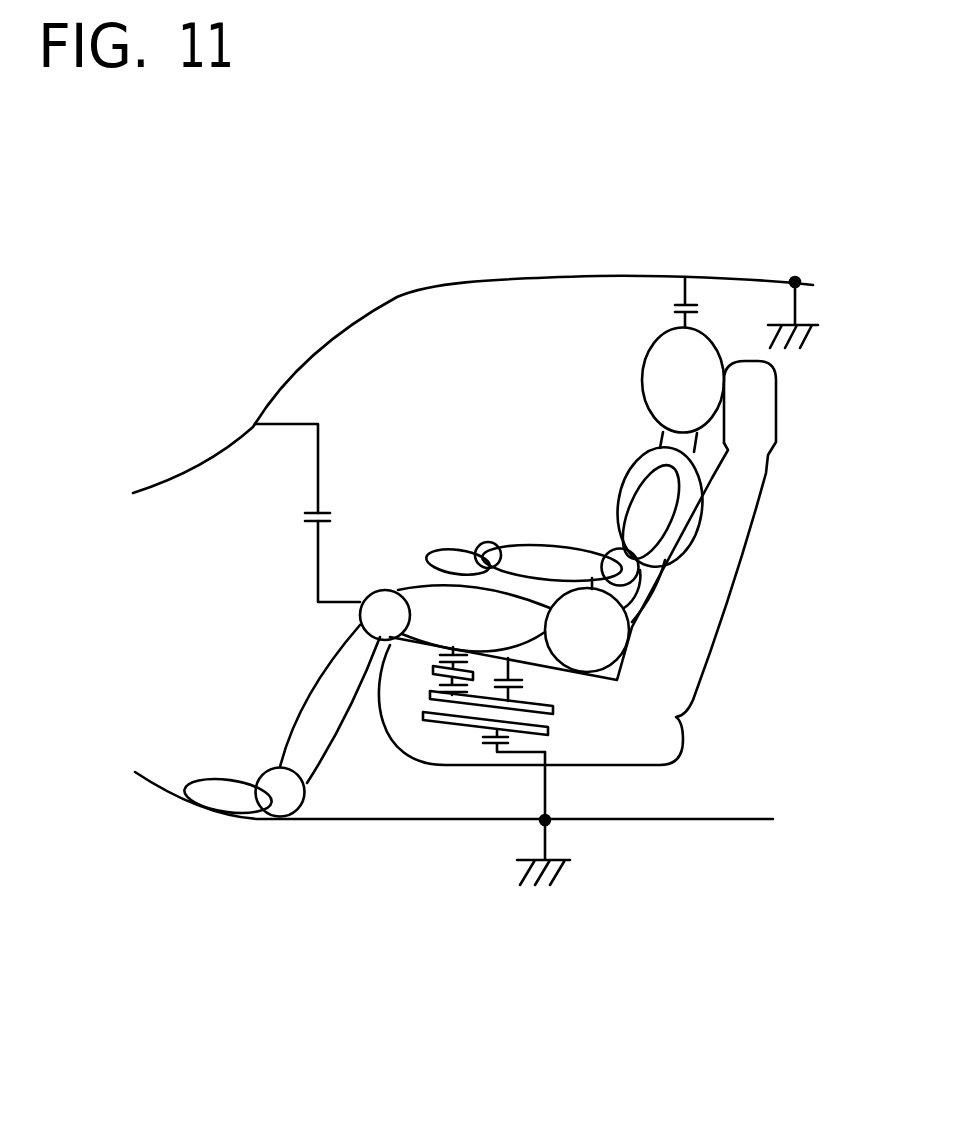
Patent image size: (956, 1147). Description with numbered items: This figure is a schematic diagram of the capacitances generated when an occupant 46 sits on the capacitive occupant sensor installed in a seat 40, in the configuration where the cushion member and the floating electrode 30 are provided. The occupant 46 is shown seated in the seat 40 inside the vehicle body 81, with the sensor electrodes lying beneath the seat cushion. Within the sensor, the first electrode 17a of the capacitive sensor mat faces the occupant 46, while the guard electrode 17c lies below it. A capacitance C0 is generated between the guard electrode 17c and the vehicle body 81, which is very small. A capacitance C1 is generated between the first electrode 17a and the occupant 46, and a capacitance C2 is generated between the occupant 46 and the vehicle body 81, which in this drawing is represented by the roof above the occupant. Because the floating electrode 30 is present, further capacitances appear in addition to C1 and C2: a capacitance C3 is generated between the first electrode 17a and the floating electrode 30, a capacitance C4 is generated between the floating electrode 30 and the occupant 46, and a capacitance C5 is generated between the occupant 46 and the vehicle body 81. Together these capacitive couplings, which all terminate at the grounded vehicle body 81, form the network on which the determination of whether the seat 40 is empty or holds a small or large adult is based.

The vehicle body 81 is at (548, 277).
The seat 40 is at (730, 593).
The occupant 46 is at (643, 383).
The floating electrode 30 is at (425, 718).
The first electrode 17a is at (555, 712).
The guard electrode 17c is at (553, 733).
The capacitance C0 is at (495, 743).
The capacitance C1 is at (524, 680).
The capacitance C2 is at (703, 302).
The capacitance C3 is at (432, 690).
The capacitance C4 is at (433, 660).
The capacitance C5 is at (335, 518).